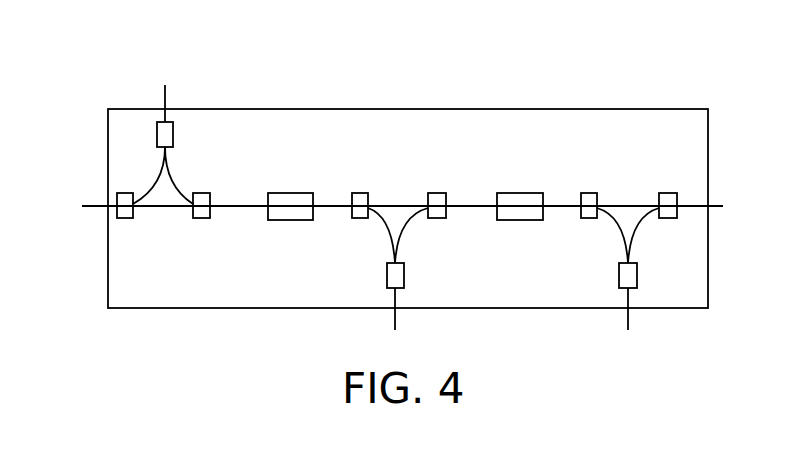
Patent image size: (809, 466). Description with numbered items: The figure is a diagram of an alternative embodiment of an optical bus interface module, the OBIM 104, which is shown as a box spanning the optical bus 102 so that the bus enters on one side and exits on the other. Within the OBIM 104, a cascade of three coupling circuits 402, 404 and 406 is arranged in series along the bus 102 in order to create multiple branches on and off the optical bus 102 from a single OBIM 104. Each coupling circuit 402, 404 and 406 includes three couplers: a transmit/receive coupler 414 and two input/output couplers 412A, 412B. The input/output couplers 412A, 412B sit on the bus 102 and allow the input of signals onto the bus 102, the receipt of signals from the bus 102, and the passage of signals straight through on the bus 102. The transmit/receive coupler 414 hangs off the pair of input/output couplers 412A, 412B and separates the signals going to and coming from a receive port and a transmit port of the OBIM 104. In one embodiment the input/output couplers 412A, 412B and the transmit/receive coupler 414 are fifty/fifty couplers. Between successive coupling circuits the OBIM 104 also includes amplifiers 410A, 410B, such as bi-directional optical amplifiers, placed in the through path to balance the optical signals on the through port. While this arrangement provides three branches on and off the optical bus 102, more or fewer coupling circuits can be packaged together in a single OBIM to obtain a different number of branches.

The optical bus 102 is at (97, 205).
The OBIM 104 is at (636, 58).
The coupling circuit 402 is at (179, 164).
The coupling circuit 404 is at (385, 206).
The coupling circuit 406 is at (607, 206).
The amplifier 410A is at (290, 200).
The amplifier 410B is at (525, 200).
The input/output coupler 412A is at (128, 219).
The input/output coupler 412B is at (205, 219).
The transmit/receive coupler 414 is at (162, 133).